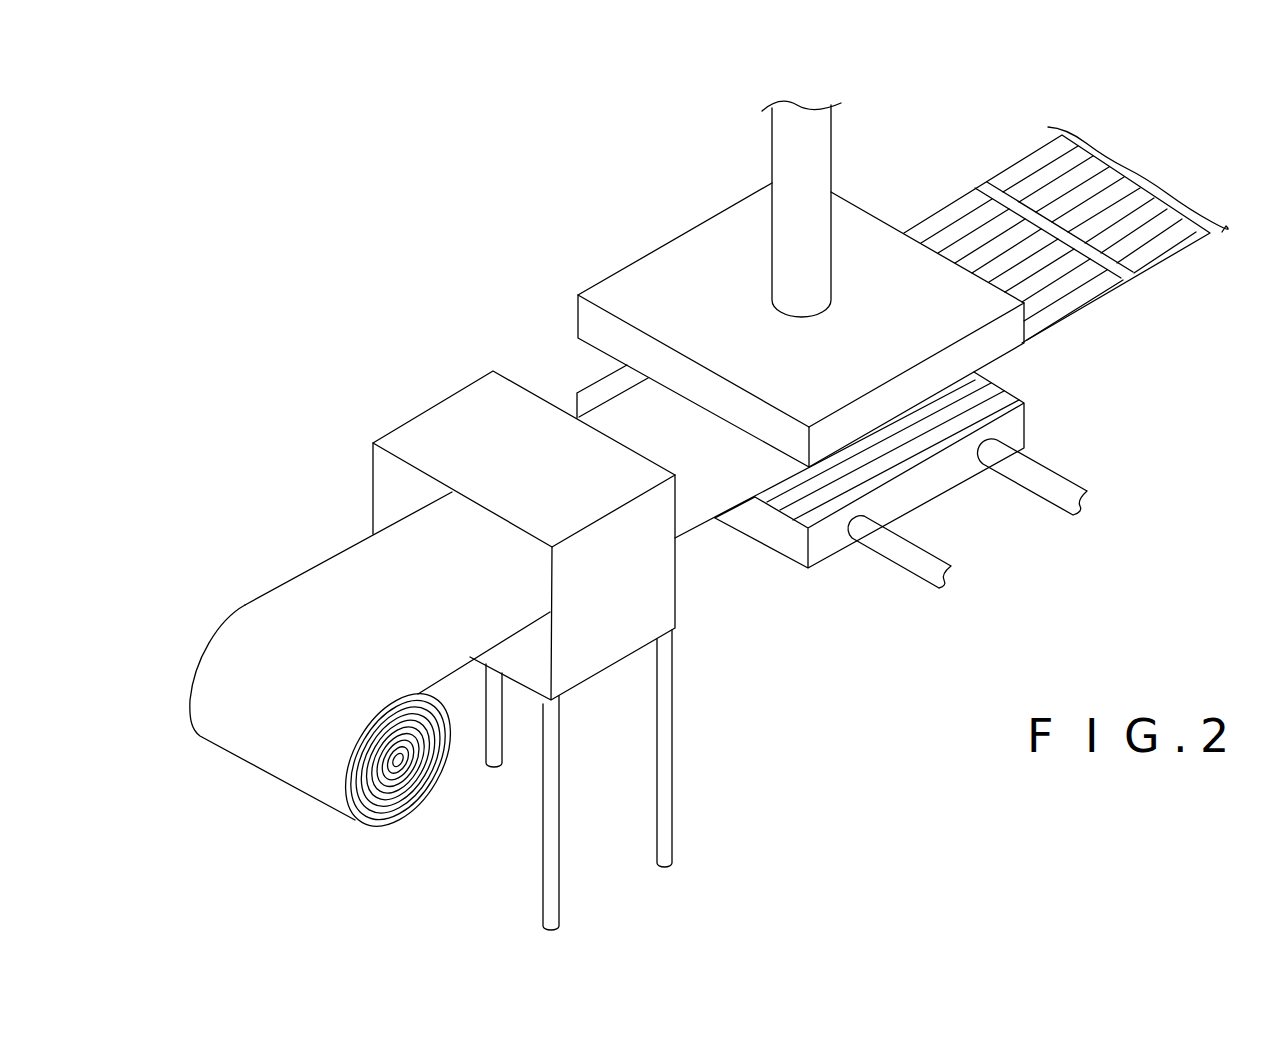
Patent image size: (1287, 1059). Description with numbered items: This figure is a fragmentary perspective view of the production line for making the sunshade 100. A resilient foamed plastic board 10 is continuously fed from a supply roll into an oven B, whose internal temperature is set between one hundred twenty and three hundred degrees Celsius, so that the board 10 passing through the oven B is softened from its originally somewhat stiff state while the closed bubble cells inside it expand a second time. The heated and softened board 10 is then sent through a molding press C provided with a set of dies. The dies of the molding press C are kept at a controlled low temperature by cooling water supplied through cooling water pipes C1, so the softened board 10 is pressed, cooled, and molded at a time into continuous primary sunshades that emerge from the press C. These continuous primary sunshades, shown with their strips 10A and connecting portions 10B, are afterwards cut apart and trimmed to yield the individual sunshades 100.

The resilient foamed plastic board 10 is at (288, 600).
The oven B is at (465, 397).
The molding press C is at (633, 275).
The cooling water pipes C1 is at (908, 570).
The sunshade 100 is at (1065, 204).
The strips 10A is at (1058, 288).
The connecting bar 10B is at (1110, 277).